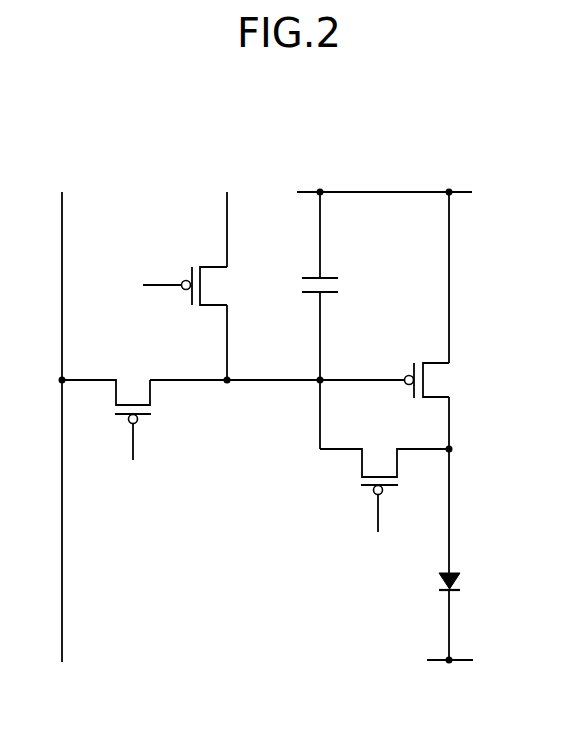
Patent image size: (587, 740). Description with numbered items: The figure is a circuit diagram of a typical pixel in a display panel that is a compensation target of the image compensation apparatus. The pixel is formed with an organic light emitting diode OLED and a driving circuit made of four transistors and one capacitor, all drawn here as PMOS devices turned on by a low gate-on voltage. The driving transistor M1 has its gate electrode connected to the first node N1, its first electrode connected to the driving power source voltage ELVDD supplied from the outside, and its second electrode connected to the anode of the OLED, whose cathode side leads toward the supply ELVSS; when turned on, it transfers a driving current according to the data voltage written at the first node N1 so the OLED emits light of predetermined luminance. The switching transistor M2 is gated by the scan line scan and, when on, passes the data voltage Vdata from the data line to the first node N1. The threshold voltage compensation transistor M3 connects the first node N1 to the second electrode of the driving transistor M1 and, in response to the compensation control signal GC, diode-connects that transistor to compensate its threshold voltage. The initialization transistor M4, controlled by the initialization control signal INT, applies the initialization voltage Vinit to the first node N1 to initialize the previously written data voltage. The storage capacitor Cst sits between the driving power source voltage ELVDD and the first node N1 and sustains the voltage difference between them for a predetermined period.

The driving transistor M1 is at (441, 320).
The switching transistor M2 is at (105, 388).
The threshold voltage compensation transistor M3 is at (386, 437).
The initialization transistor M4 is at (219, 286).
The storage capacitor Cst is at (343, 286).
The organic light emitting diode OLED is at (481, 554).
The first node N1 is at (277, 395).
The data voltage Vdata is at (63, 413).
The initialization voltage Vinit is at (226, 215).
The driving power source voltage ELVDD is at (384, 177).
The second power supply voltage ELVSS is at (448, 678).
The initialization control signal INT is at (145, 286).
The scan line scan is at (132, 456).
The compensation control signal GC is at (379, 529).